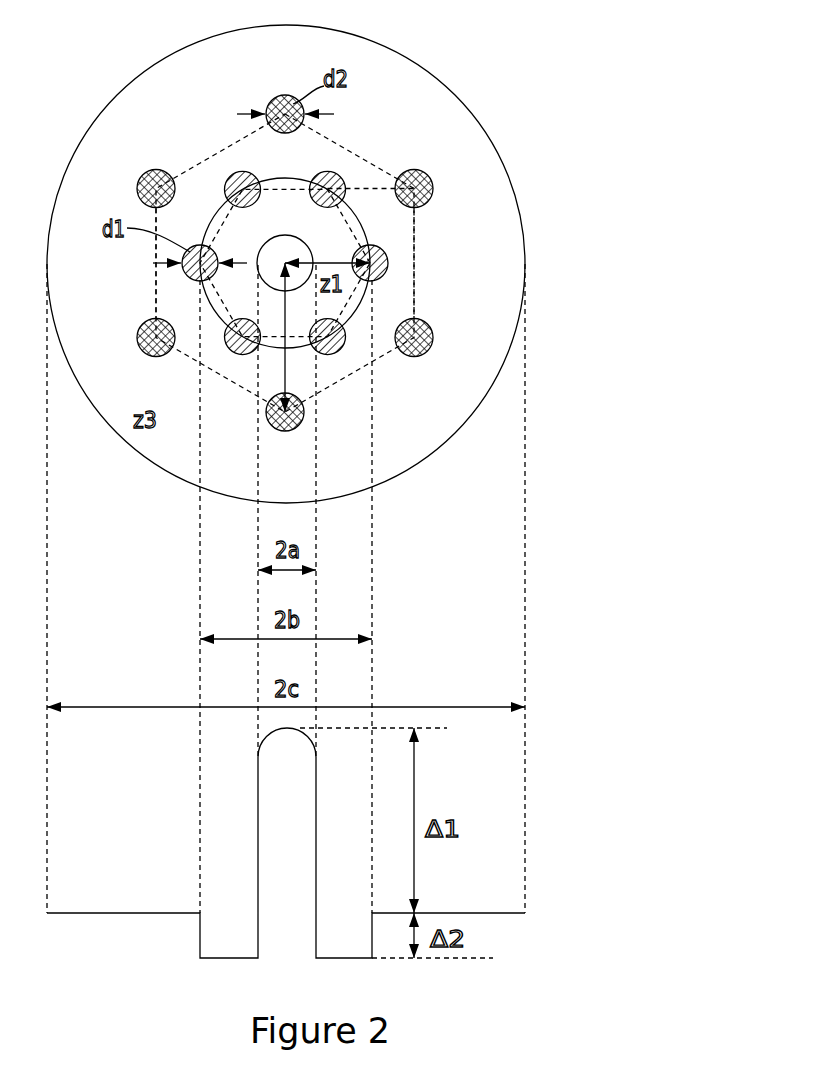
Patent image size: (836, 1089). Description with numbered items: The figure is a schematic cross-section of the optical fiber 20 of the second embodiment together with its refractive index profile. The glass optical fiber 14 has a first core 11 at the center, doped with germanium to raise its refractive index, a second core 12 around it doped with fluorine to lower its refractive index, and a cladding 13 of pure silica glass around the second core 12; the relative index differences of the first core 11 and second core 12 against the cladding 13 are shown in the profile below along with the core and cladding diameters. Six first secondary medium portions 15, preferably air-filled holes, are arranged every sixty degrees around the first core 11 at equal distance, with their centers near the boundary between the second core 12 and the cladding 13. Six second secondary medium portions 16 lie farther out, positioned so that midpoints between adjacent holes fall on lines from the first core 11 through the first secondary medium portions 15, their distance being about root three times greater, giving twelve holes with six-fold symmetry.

The first core 11 is at (284, 256).
The second core 12 is at (333, 247).
The cladding 13 is at (470, 250).
The glass optical fiber 14 is at (588, 88).
The first secondary medium portions 15 is at (389, 269).
The second secondary medium portions 16 is at (433, 343).
The optical fiber 20 is at (750, 89).